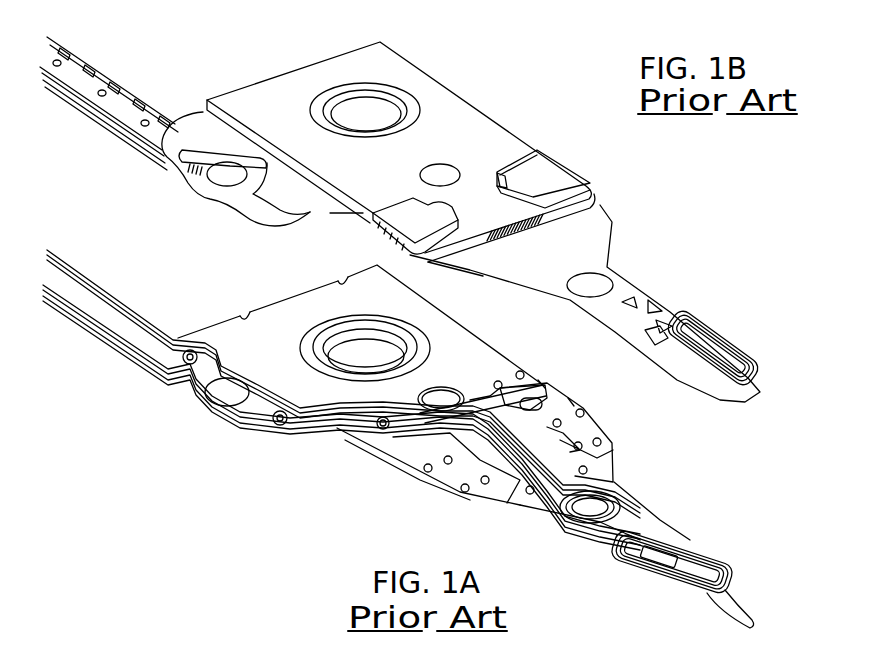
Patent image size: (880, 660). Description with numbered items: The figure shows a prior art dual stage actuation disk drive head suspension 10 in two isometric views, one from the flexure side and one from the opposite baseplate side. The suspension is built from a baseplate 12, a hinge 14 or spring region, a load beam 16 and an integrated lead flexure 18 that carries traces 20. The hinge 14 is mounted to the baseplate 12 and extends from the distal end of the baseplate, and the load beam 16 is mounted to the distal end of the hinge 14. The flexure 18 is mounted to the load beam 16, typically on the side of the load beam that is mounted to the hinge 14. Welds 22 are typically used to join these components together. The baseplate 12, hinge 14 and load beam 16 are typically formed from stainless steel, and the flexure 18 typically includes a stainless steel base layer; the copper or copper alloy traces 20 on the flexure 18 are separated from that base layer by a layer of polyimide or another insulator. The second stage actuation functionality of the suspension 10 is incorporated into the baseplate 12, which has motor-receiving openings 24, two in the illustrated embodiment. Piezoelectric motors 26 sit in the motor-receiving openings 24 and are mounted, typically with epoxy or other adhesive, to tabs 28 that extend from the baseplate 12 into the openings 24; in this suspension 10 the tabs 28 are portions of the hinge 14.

In FIG. 1B, the DSA head suspension 10 is at (446, 68).
In FIG. 1A, the DSA head suspension 10 is at (323, 445).
In FIG. 1B, the baseplate 12 is at (462, 110).
In FIG. 1A, the baseplate 12 is at (358, 433).
In FIG. 1B, the hinge 14 is at (590, 208).
In FIG. 1A, the hinge 14 is at (497, 352).
In FIG. 1B, the load beam 16 is at (610, 265).
In FIG. 1A, the load beam 16 is at (500, 492).
In FIG. 1B, the integrated lead flexure 18 is at (724, 338).
In FIG. 1A, the integrated lead flexure 18 is at (590, 532).
In FIG. 1B, the traces 20 is at (210, 188).
In FIG. 1A, the traces 20 is at (117, 348).
In FIG. 1A, the welds 22 is at (520, 375).
In FIG. 1B, the motor-receiving openings 24 is at (507, 188).
In FIG. 1A, the motor-receiving openings 24 is at (560, 392).
In FIG. 1B, the piezoelectric (PZT) motors 26 is at (548, 172).
In FIG. 1A, the piezoelectric (PZT) motors 26 is at (395, 446).
In FIG. 1A, the tabs 28 is at (540, 380).